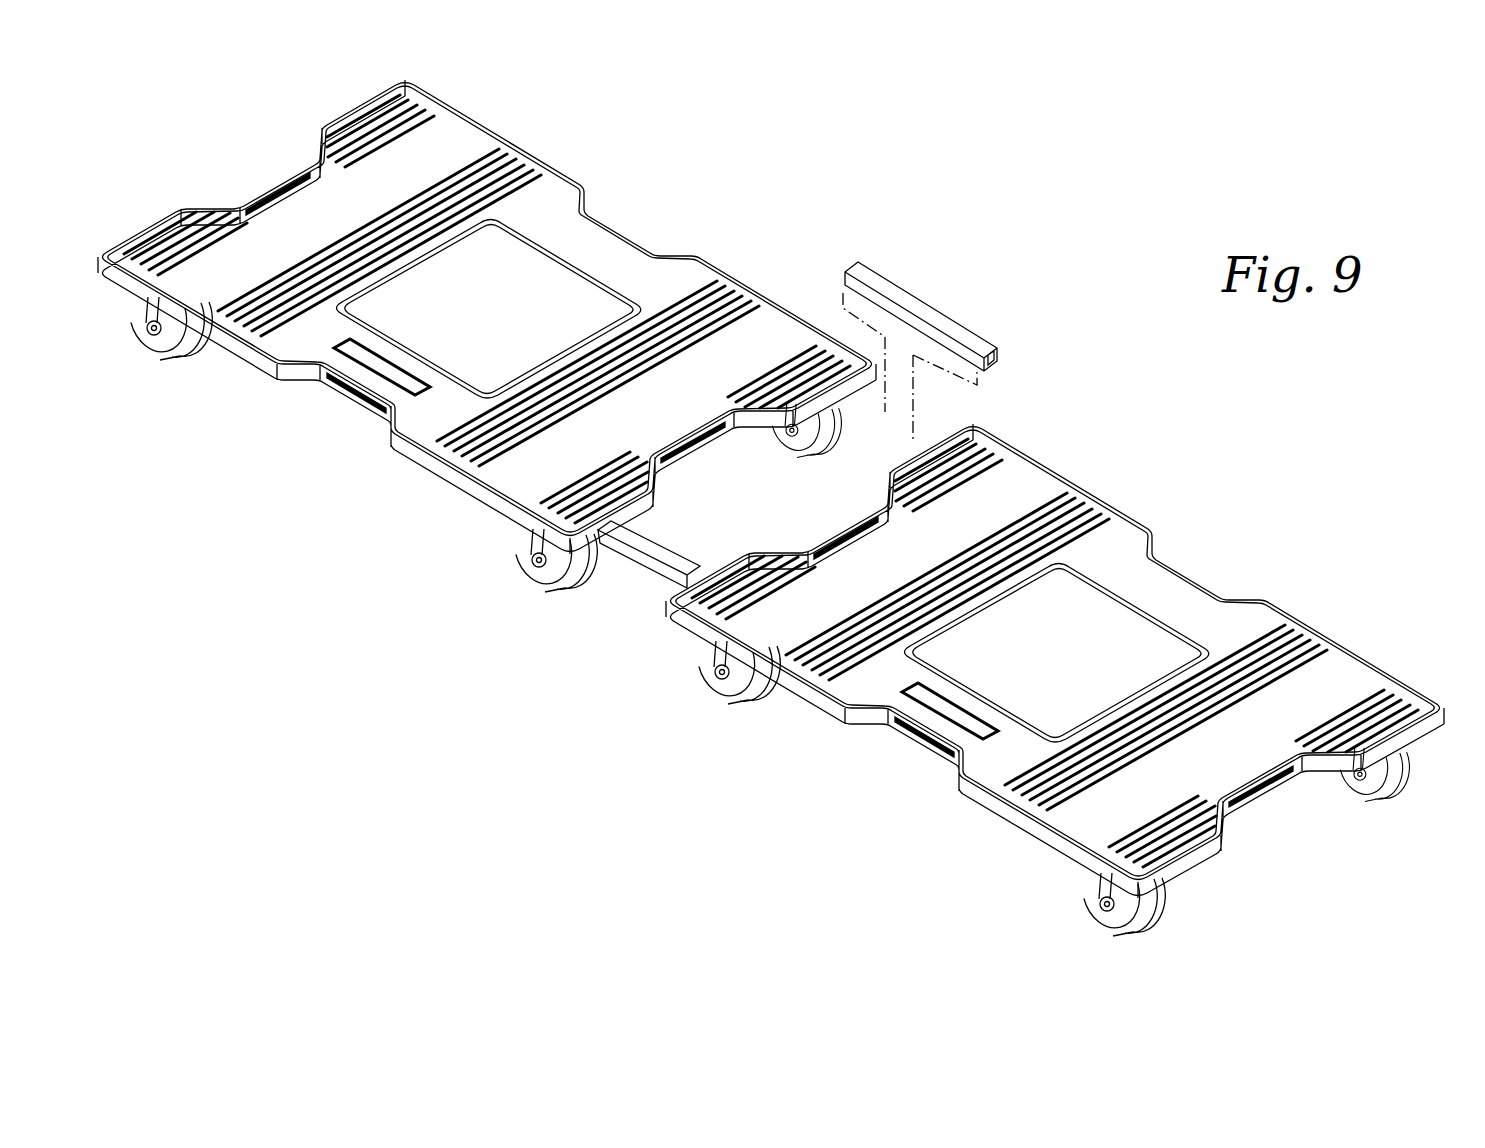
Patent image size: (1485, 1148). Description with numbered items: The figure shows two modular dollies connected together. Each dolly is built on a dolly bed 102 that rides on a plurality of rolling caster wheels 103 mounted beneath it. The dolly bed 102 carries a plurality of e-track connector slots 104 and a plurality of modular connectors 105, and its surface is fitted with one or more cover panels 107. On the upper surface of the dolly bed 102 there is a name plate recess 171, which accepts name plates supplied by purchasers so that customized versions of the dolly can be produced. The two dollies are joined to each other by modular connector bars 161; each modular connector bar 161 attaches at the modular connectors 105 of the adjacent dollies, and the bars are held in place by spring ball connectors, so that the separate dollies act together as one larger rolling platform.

The dolly bed 102 is at (1175, 587).
The rolling caster wheel 103 is at (1085, 882).
The e-track connector slot 104 is at (1265, 780).
The modular connector 105 is at (905, 440).
The cover panel 107 is at (1330, 660).
The modular connector bar 161 is at (635, 560).
The name plate recess 171 is at (970, 715).